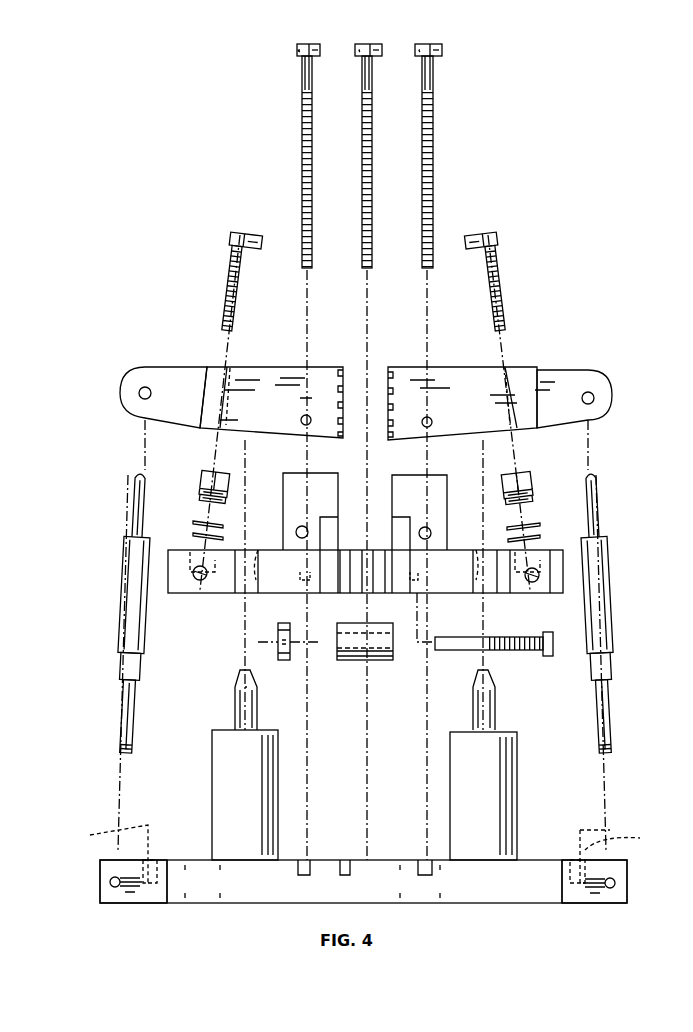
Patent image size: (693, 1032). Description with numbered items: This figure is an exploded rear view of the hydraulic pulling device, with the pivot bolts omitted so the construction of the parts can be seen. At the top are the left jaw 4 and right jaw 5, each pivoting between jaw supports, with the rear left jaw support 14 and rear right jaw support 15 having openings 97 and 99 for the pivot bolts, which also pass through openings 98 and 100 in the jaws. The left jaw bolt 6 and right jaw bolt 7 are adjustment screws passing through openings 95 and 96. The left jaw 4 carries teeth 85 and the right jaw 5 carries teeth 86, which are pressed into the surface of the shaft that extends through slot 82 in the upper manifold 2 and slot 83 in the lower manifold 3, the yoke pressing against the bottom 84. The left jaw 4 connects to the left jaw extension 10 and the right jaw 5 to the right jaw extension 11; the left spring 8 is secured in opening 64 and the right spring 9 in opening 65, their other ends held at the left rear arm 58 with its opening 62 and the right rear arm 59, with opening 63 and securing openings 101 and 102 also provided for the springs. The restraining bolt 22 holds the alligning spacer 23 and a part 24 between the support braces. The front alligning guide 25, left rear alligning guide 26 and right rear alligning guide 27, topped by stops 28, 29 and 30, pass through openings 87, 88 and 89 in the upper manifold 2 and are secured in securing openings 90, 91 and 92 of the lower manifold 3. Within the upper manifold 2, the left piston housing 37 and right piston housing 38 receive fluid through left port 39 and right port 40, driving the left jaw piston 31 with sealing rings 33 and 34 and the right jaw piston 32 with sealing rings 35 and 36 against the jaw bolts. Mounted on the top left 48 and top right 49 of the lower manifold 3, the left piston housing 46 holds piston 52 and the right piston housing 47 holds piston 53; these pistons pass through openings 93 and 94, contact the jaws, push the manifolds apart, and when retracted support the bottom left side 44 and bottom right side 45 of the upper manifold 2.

The upper manifold 2 is at (359, 572).
The lower manifold 3 is at (365, 864).
The left jaw 4 is at (470, 390).
The right jaw 5 is at (265, 389).
The left jaw bolt 6 is at (494, 258).
The right jaw bolt 7 is at (240, 250).
The left spring 8 is at (610, 635).
The right spring 9 is at (122, 630).
The left jaw extension 10 is at (591, 384).
The right jaw extension 11 is at (141, 384).
The rear left jaw support 14 is at (424, 523).
The rear right jaw support 15 is at (295, 523).
The restraining bolt 22 is at (546, 656).
The alligning spacer 23 is at (350, 660).
The key 24 is at (278, 652).
The front alligning guide 25 is at (362, 265).
The left rear alligning guide 26 is at (422, 265).
The right rear alligning guide 27 is at (302, 265).
The stop 28 is at (362, 58).
The stop 29 is at (422, 58).
The stop 30 is at (300, 58).
The left jaw piston 31 is at (525, 474).
The right jaw piston 32 is at (202, 478).
The sealing ring 33 is at (535, 523).
The sealing ring 34 is at (537, 535).
The sealing ring 35 is at (197, 520).
The sealing ring 36 is at (197, 533).
The left piston housing 37 is at (540, 535).
The right piston housing 38 is at (190, 537).
The left port 39 is at (536, 582).
The right port 40 is at (198, 580).
The bottom left side 44 is at (530, 593).
The bottom right side 45 is at (200, 593).
The left piston housing 46 is at (500, 762).
The right piston housing 47 is at (215, 760).
The top left 48 is at (517, 858).
The top right 49 is at (212, 858).
The piston 52 is at (474, 700).
The piston 53 is at (236, 700).
The left rear arm 58 is at (627, 893).
The right rear arm 59 is at (100, 888).
The opening 62 is at (614, 880).
The opening 63 is at (113, 877).
The opening 64 is at (594, 398).
The opening 65 is at (139, 393).
The slot 82 is at (340, 474).
The slot 83 is at (350, 860).
The bottom 84 is at (170, 903).
The teeth 85 is at (390, 372).
The teeth 86 is at (343, 370).
The opening 87 is at (368, 593).
The opening 88 is at (420, 580).
The opening 89 is at (300, 578).
The securing opening 90 is at (372, 860).
The securing opening 91 is at (425, 860).
The securing opening 92 is at (306, 860).
The opening 93 is at (476, 550).
The opening 94 is at (258, 550).
The opening 95 is at (507, 368).
The opening 96 is at (228, 368).
The opening 97 is at (425, 527).
The opening 98 is at (432, 418).
The opening 99 is at (300, 527).
The opening 100 is at (303, 416).
The securing opening 101 is at (619, 856).
The securing opening 102 is at (96, 828).